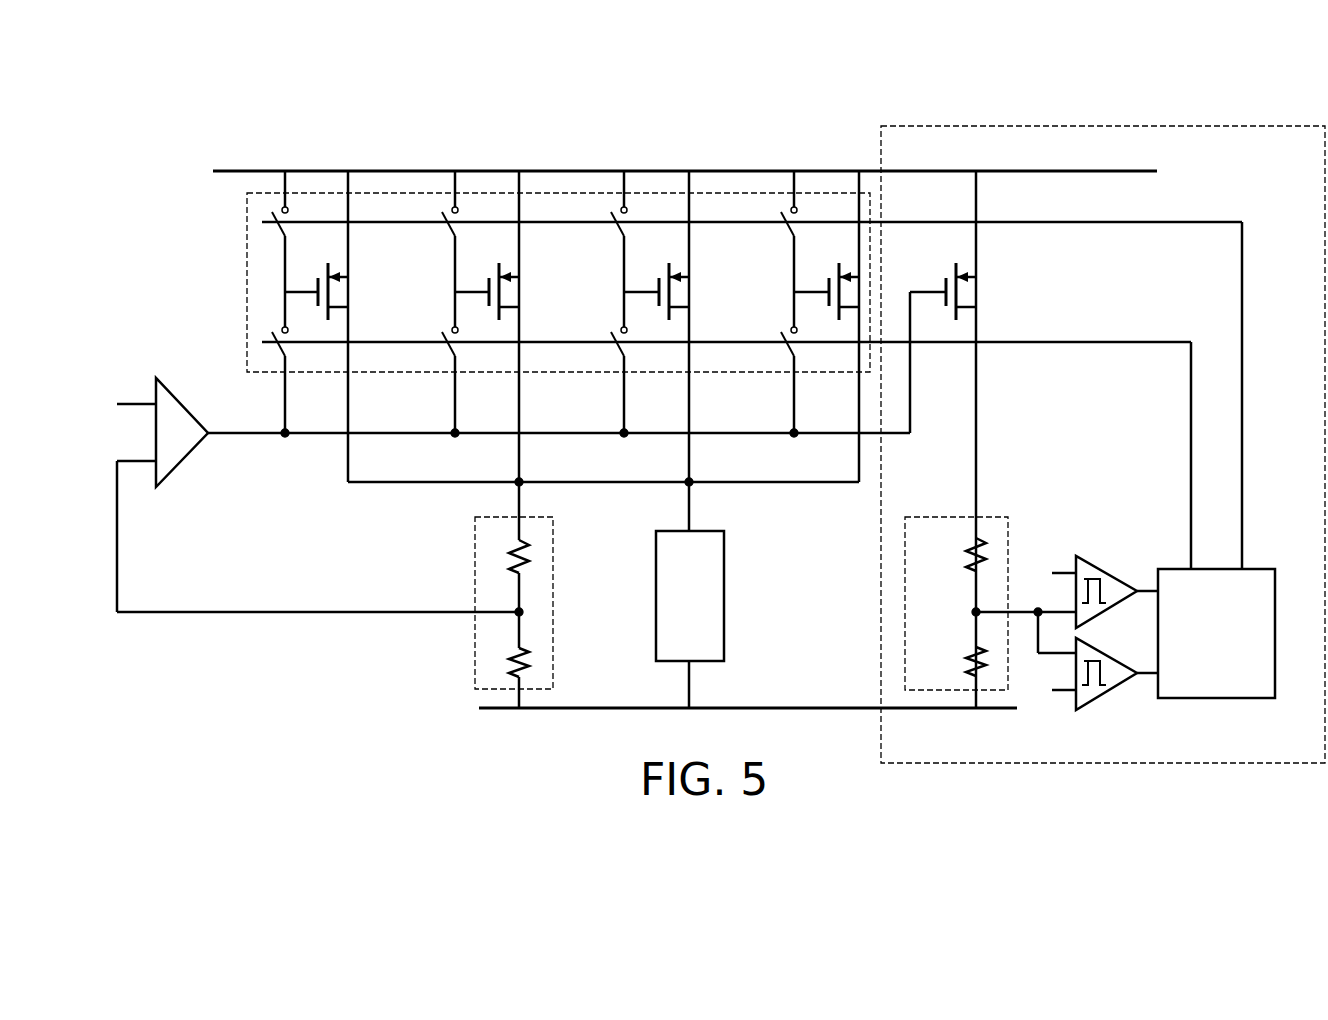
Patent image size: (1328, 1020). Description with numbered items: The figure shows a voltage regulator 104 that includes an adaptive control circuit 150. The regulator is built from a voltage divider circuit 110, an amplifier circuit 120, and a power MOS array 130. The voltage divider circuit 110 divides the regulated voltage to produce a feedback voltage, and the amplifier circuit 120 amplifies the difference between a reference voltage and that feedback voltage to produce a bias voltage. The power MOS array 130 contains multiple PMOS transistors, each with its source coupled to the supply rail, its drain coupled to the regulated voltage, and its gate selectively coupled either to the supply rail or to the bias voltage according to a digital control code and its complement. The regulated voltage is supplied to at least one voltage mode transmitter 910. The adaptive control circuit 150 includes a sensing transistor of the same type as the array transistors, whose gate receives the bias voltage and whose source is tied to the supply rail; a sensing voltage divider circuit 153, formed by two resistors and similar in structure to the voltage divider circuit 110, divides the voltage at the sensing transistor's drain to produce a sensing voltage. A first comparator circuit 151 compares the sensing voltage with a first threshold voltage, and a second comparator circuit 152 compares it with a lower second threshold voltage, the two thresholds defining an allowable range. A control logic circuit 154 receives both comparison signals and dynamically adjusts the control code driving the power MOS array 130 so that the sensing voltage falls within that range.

The voltage regulator 104 is at (1313, 87).
The voltage divider circuit 110 is at (553, 560).
The amplifier circuit 120 is at (184, 462).
The power MOS array 130 is at (247, 284).
The adaptive control circuit 150 is at (1098, 764).
The first comparator circuit 151 is at (1110, 568).
The second comparator circuit 152 is at (1106, 694).
The sensing voltage divider circuit 153 is at (968, 517).
The control logic circuit 154 is at (1215, 699).
The voltage mode transmitter 910 is at (724, 596).